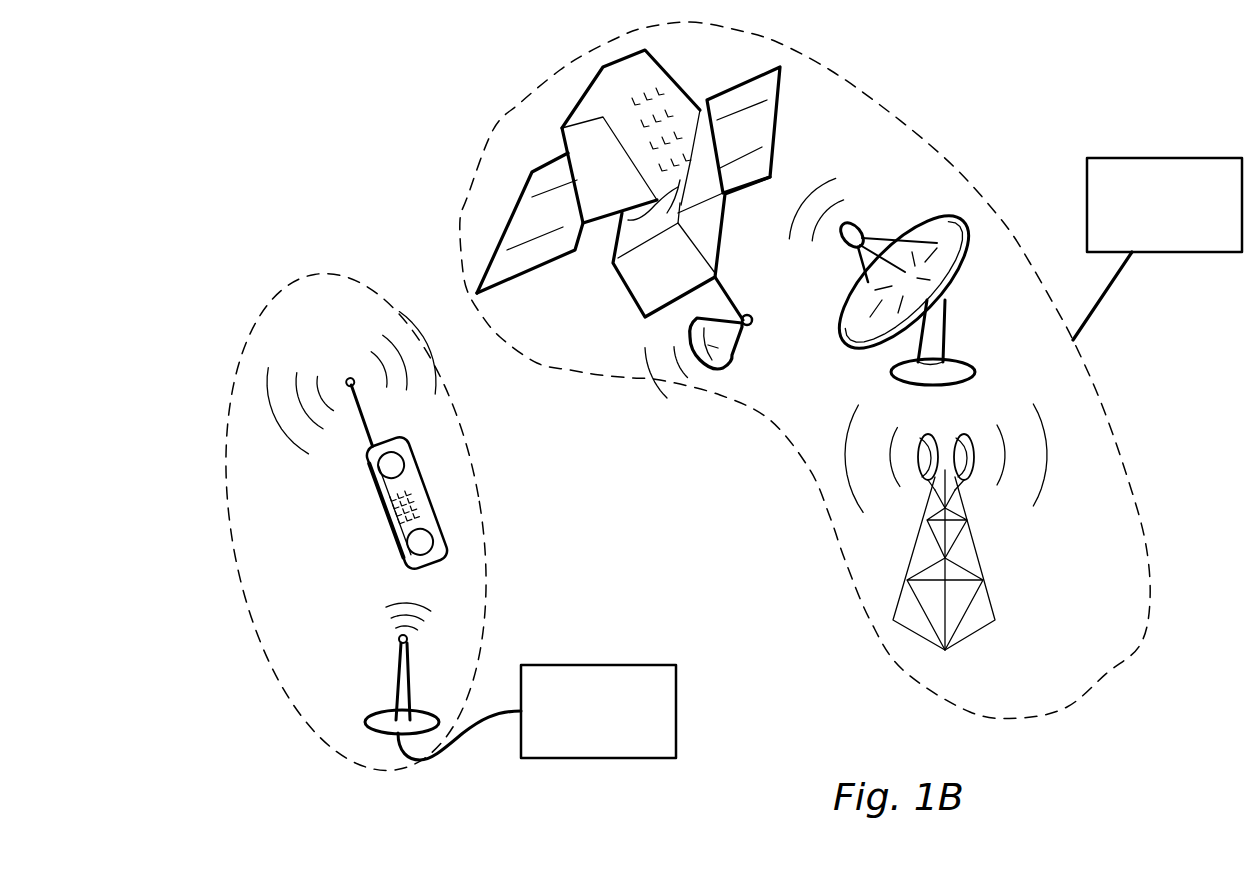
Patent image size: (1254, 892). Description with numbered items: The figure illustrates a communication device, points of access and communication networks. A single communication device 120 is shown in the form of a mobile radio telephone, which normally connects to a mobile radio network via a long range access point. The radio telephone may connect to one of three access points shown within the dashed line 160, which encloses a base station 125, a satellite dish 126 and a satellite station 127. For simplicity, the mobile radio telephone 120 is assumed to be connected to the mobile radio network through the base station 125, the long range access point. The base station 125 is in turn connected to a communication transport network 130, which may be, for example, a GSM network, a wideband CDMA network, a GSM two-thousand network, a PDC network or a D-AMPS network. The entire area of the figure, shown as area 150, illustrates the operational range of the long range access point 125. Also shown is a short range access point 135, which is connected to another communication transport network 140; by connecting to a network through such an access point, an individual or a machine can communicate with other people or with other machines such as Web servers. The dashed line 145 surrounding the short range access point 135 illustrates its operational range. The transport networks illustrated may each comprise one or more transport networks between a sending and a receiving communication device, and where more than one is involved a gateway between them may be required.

The communication device 120 is at (363, 515).
The base station 125 is at (978, 553).
The satellite dish 126 is at (947, 325).
The satellite station 127 is at (780, 128).
The communication transport network 130 is at (1163, 158).
The short range access point 135 is at (398, 675).
The communication transport network 140 is at (677, 711).
The dashed line 145 is at (243, 575).
The area 150 is at (402, 198).
The dashed line 160 is at (1078, 698).